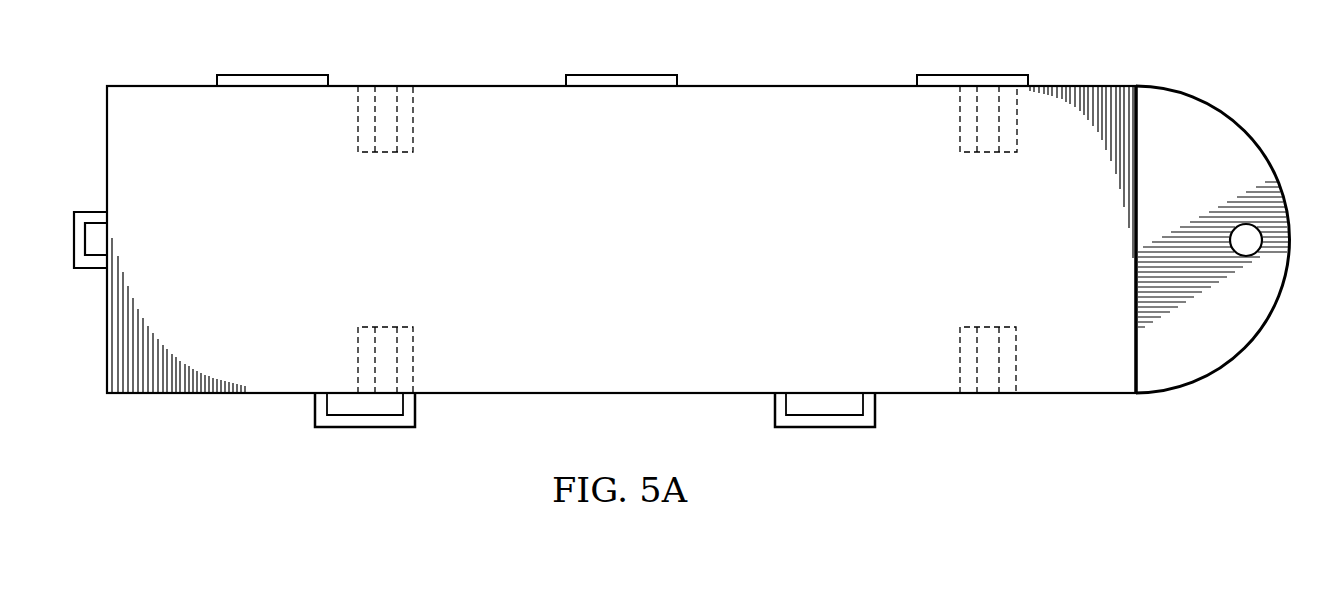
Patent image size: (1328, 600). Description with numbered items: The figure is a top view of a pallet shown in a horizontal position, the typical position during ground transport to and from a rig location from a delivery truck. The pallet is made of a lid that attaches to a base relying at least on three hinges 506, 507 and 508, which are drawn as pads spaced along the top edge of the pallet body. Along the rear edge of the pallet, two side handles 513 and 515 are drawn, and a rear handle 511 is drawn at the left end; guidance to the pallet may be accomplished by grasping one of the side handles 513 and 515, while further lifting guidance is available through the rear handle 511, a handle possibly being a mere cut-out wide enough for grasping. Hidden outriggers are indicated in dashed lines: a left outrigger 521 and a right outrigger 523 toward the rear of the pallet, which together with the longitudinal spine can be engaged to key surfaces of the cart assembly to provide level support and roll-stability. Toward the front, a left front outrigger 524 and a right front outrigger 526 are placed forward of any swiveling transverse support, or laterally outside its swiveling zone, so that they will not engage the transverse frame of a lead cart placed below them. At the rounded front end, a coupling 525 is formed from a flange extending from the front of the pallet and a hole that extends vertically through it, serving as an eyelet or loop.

The hinge 506 is at (271, 74).
The hinge 507 is at (621, 74).
The hinge 508 is at (970, 74).
The rear handle 511 is at (90, 211).
The side handle 513 is at (362, 428).
The side handle 515 is at (823, 428).
The left outrigger 521 is at (356, 128).
The right outrigger 523 is at (356, 354).
The left front outrigger 524 is at (1019, 128).
The coupling 525 is at (1258, 152).
The right front outrigger 526 is at (1018, 352).